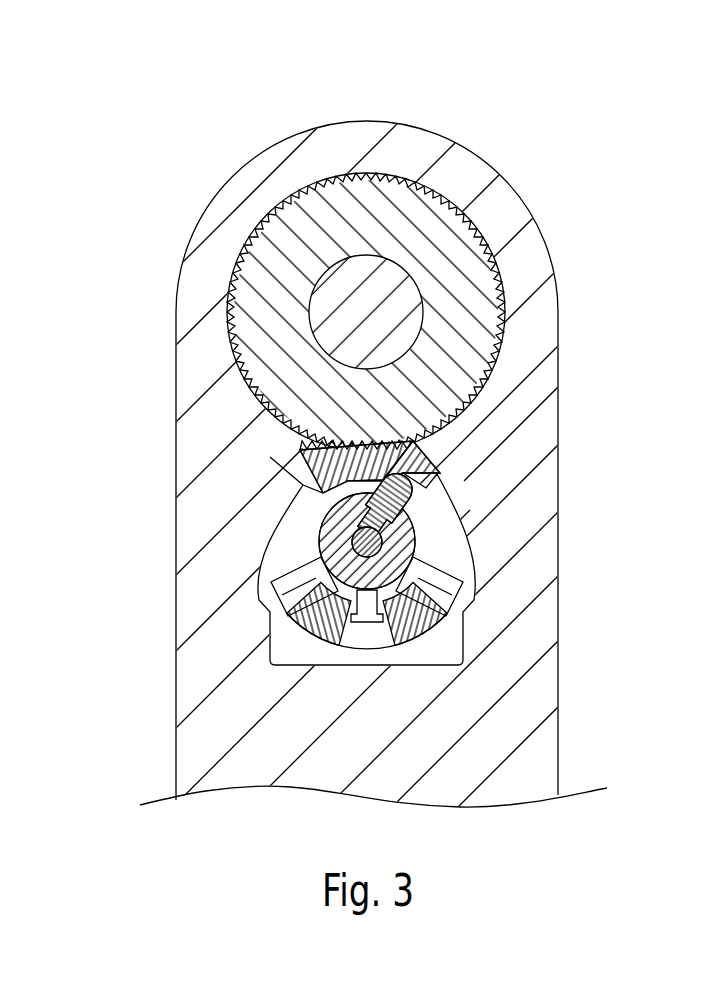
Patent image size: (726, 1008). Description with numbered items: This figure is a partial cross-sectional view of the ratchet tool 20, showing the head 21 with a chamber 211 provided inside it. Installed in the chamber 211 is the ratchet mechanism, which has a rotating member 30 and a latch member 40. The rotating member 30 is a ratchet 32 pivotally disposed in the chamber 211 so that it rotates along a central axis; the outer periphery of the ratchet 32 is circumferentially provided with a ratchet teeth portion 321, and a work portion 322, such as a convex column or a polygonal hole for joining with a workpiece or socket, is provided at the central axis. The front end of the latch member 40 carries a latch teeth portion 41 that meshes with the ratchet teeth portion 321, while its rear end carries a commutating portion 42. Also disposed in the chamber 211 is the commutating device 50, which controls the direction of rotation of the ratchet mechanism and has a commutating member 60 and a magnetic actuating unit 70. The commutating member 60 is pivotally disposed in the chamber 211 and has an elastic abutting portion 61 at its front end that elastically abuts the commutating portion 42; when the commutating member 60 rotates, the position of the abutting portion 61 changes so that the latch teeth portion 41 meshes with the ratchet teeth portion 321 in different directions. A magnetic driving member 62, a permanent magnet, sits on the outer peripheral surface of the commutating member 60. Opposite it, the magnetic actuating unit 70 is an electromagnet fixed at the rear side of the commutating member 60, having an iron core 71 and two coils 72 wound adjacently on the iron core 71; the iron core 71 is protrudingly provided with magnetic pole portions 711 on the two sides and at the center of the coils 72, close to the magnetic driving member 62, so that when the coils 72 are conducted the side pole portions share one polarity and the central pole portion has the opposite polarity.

The ratchet tool 20 is at (162, 170).
The head 21 is at (287, 138).
The chamber 211 is at (275, 203).
The rotating member 30 is at (449, 233).
The ratchet 32 is at (435, 230).
The ratchet teeth portion 321 is at (412, 178).
The work portion 322 is at (360, 256).
The latch member 40 is at (367, 402).
The latch teeth portion 41 is at (300, 447).
The commutating portion 42 is at (438, 456).
The commutating device 50 is at (452, 505).
The commutating member 60 is at (370, 510).
The abutting portion 61 is at (446, 506).
The magnetic driving member 62 is at (352, 540).
The magnetic actuating unit 70 is at (371, 715).
The iron core 71 is at (367, 612).
The magnetic pole portion 711 is at (322, 582).
The coils 72 is at (457, 650).